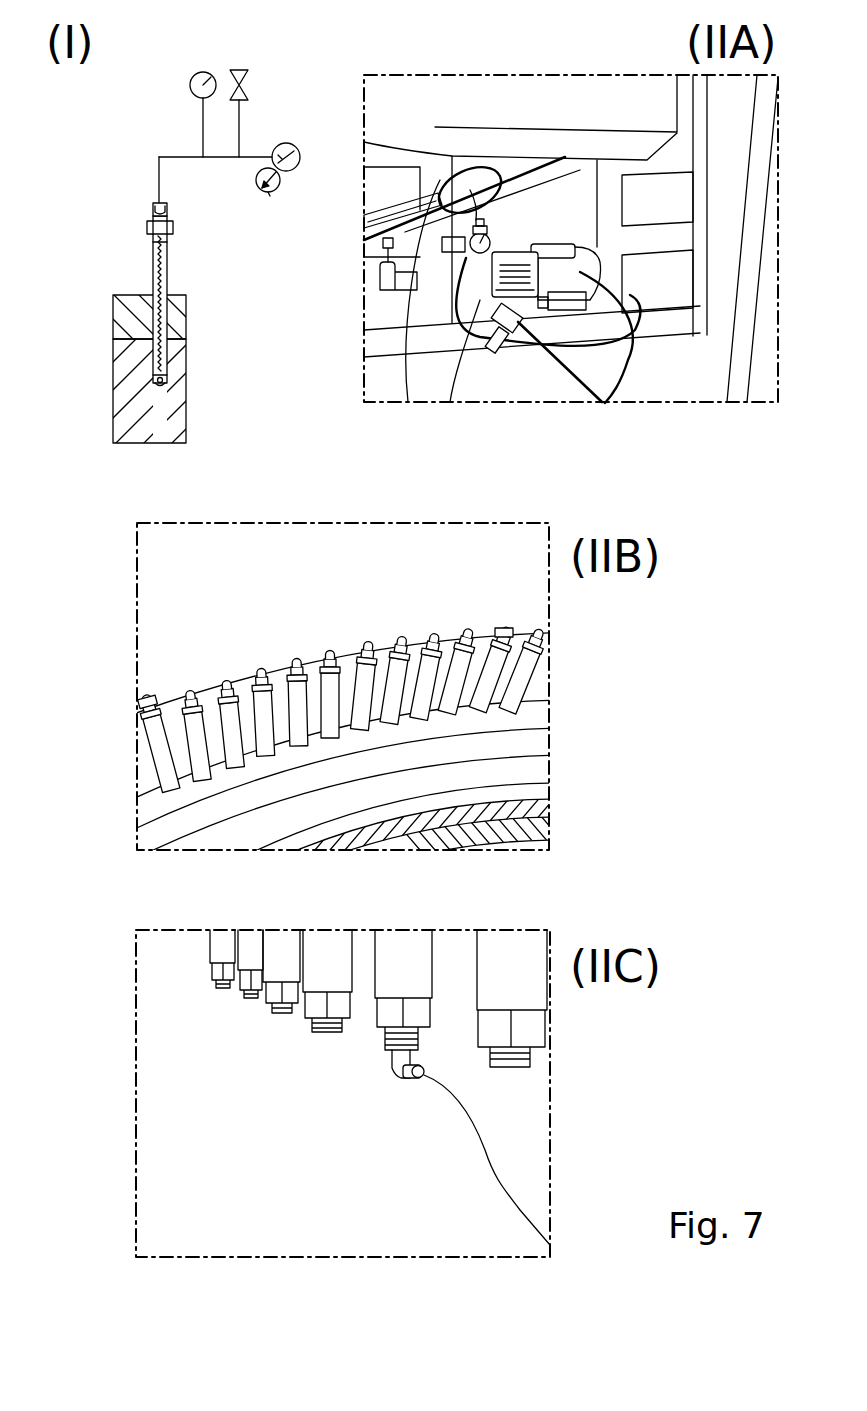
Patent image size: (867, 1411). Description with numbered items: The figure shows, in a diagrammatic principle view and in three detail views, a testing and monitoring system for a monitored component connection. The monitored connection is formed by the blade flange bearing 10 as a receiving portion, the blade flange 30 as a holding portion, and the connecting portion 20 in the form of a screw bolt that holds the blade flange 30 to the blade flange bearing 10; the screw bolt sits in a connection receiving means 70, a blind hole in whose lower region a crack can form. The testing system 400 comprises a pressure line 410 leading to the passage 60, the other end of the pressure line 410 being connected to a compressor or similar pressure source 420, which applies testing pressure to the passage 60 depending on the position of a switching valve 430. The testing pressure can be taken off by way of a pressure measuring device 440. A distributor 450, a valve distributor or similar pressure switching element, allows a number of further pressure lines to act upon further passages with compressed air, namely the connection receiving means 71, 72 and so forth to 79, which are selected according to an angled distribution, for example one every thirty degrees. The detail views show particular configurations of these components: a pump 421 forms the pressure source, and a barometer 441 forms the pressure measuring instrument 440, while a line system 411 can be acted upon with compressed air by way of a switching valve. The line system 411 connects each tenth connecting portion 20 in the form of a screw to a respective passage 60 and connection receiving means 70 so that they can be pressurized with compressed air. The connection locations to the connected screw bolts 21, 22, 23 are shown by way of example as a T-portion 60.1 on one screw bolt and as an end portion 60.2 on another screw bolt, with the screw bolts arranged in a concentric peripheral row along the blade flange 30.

The testing system 400 is at (210, 48).
The pressure line 410 is at (160, 155).
The pressure source 420 is at (287, 143).
The switching valve 430 is at (237, 68).
The pressure measuring device 440 is at (192, 78).
The distributor 450 is at (283, 184).
The connection receiving means 71 is at (302, 222).
The connection receiving means 72 is at (302, 222).
The connection receiving means 79 is at (268, 192).
The blade flange bearing 10 is at (125, 430).
The connecting portion 20 is at (153, 268).
The blade flange 30 is at (125, 322).
The passage 60 is at (153, 243).
The connection receiving means 70 is at (166, 372).
The line system 411 is at (470, 190).
The barometer 441 is at (480, 300).
The pump 421 is at (616, 340).
The screw bolt 23 is at (190, 705).
The screw bolt 21 is at (431, 640).
The T-portion 60.1 is at (503, 628).
The screw bolt 22 is at (388, 1045).
The end portion 60.2 is at (414, 1080).